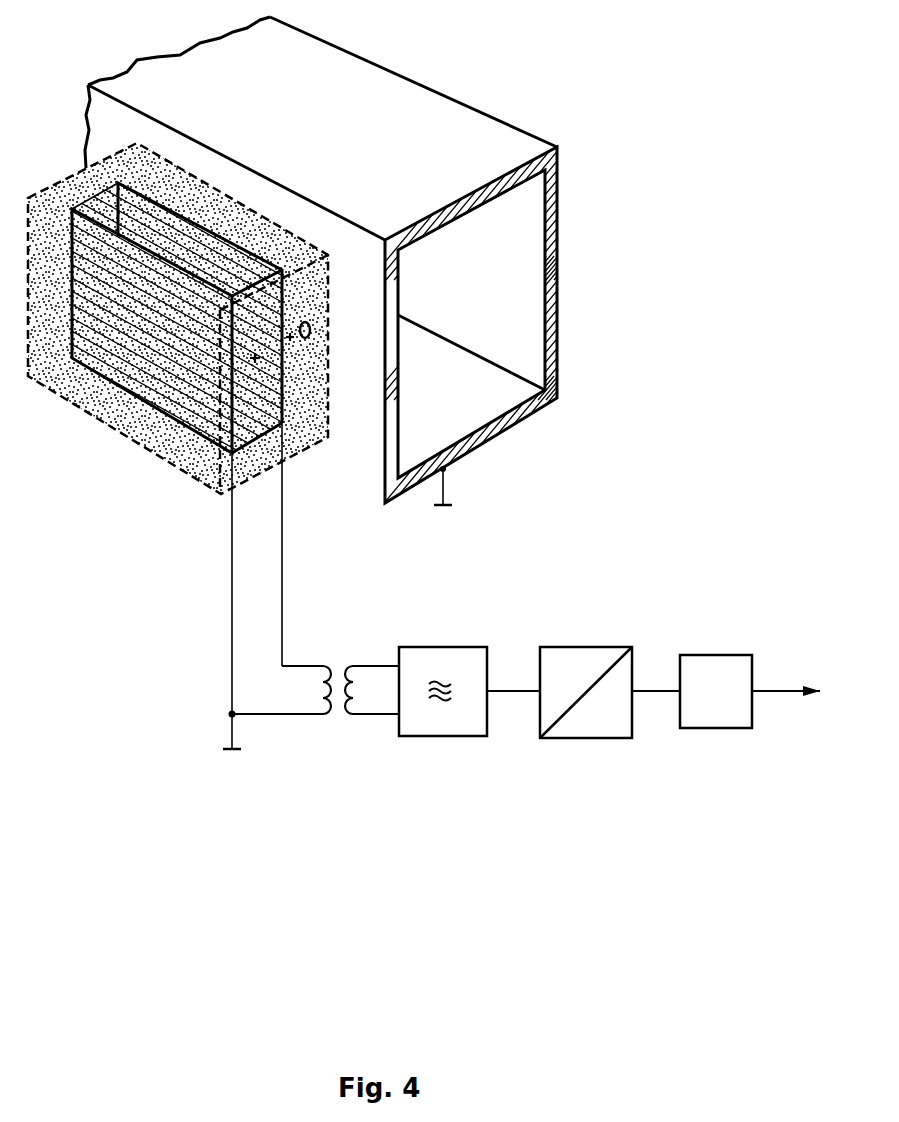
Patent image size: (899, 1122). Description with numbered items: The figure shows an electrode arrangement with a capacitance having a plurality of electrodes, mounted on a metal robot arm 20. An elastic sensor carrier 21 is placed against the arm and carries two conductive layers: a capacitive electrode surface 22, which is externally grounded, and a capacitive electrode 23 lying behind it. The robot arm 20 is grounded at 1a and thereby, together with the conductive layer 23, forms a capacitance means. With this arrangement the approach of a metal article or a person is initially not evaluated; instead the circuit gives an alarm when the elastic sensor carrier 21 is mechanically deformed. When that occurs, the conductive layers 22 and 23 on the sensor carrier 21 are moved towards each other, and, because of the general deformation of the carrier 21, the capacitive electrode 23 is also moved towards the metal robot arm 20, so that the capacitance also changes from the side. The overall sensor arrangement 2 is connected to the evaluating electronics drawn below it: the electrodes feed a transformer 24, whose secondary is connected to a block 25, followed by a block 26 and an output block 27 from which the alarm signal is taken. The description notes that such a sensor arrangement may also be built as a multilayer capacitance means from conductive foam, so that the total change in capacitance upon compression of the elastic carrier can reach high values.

The sensor arrangement 2 is at (190, 357).
The ground 1a is at (453, 500).
The metal robot arm 20 is at (442, 117).
The elastic sensor carrier 21 is at (115, 412).
The capacitive electrode surface 22 is at (173, 392).
The capacitive electrode 23 is at (117, 230).
The transformer 24 is at (338, 660).
The oscillator 25 is at (452, 723).
The frequency discriminator 26 is at (577, 727).
The output stage 27 is at (703, 717).